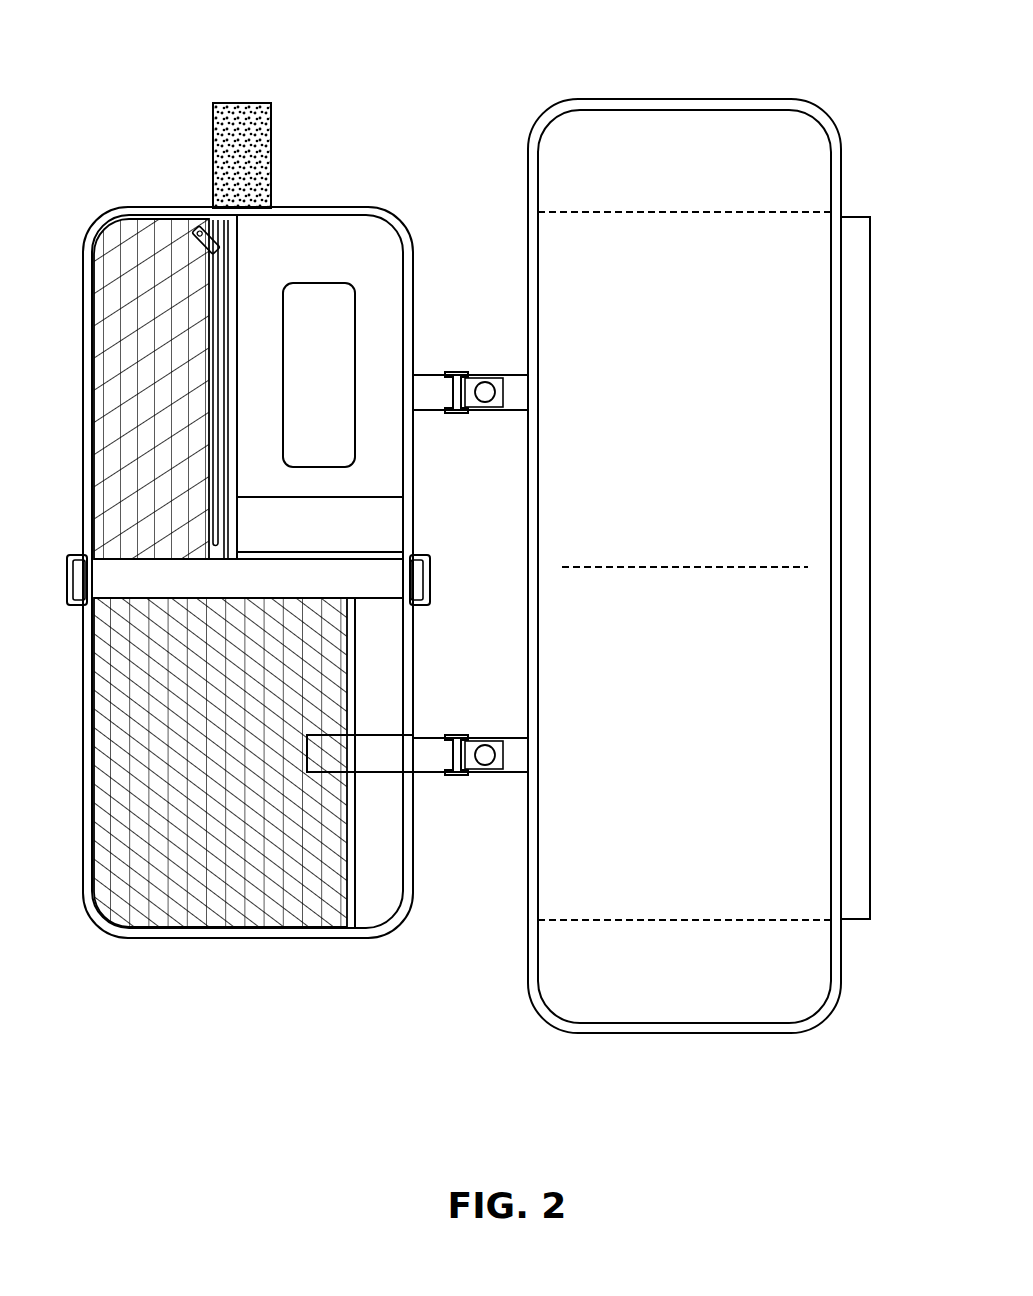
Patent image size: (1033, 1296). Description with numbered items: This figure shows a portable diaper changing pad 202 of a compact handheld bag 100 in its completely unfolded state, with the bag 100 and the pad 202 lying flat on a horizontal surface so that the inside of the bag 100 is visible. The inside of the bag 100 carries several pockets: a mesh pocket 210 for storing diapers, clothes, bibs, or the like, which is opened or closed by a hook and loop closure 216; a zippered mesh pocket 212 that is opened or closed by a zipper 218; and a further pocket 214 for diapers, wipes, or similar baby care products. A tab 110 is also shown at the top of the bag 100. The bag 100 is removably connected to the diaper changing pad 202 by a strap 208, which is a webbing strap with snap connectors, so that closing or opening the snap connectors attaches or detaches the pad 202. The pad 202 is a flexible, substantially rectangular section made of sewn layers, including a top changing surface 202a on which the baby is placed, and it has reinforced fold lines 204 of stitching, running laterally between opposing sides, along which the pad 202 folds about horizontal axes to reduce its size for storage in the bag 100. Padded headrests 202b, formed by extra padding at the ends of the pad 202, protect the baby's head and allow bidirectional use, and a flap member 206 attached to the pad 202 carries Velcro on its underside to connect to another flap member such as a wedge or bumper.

The compact handheld bag 100 is at (408, 243).
The tab 110 is at (247, 110).
The diaper changing pad 202 is at (713, 558).
The top surface 202a is at (795, 102).
The headrest 202b is at (813, 185).
The fold line 204 is at (592, 212).
The flap member 206 is at (872, 340).
The strap 208 is at (423, 377).
The pocket 210 is at (172, 902).
The pocket 212 is at (113, 325).
The pocket 214 is at (297, 240).
The hook and loop closure 216 is at (360, 765).
The zipper 218 is at (195, 228).